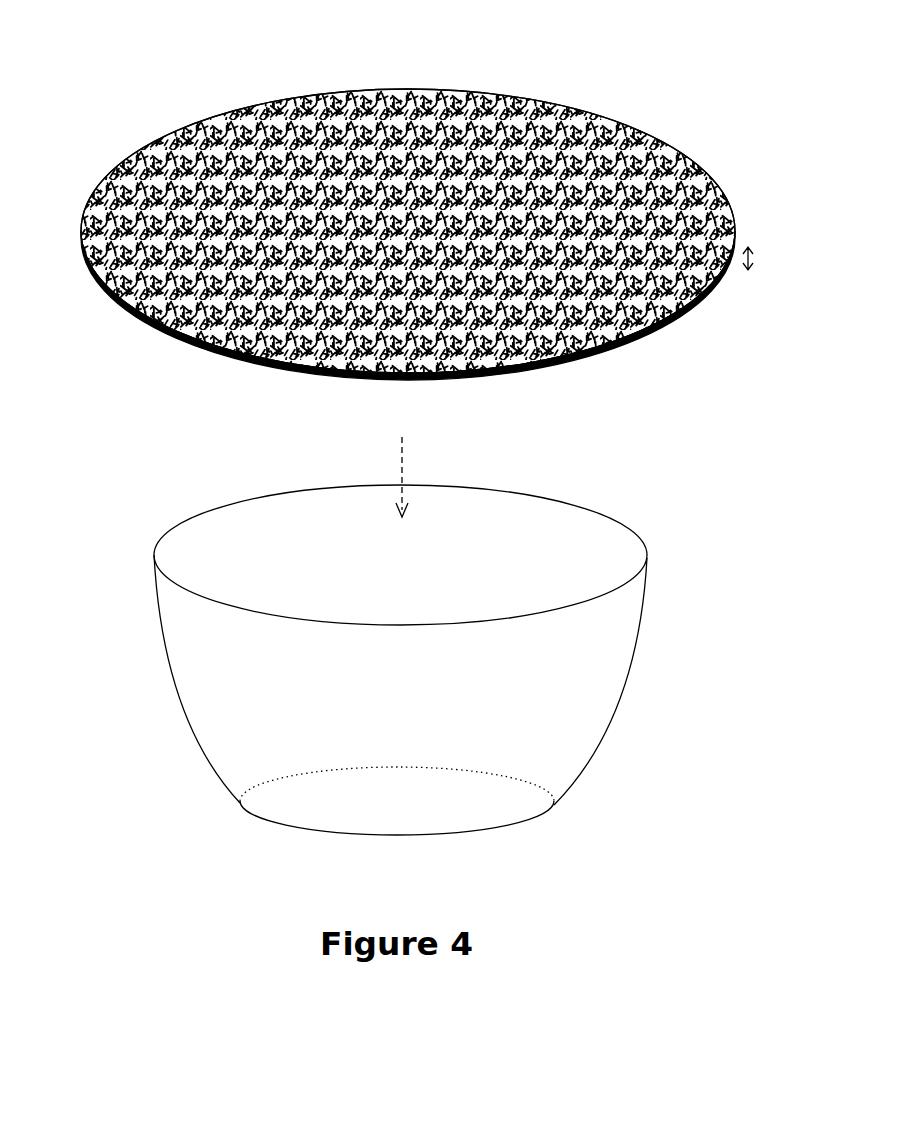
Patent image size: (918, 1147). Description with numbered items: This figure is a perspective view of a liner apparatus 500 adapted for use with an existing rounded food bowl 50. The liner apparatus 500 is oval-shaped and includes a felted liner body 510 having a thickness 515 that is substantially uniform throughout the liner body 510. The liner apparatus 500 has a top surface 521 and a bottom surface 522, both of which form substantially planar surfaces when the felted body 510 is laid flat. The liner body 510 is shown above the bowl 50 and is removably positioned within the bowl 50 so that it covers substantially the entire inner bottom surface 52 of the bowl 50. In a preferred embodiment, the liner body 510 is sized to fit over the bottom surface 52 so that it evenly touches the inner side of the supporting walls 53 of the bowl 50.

The liner apparatus 500 is at (433, 229).
The felted liner body 510 is at (290, 128).
The top surface 521 is at (592, 122).
The bottom surface 522 is at (348, 378).
The thickness 515 is at (776, 262).
The bowl 50 is at (367, 677).
The supporting walls 53 is at (550, 552).
The inner bottom surface 52 is at (455, 810).